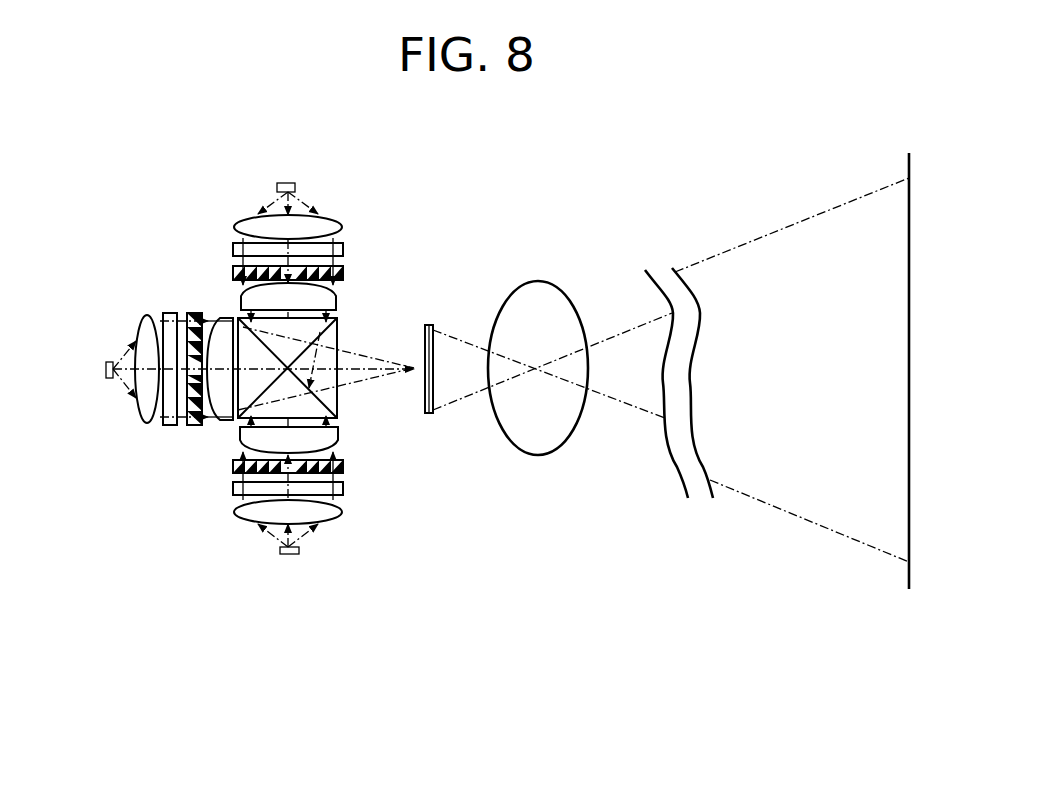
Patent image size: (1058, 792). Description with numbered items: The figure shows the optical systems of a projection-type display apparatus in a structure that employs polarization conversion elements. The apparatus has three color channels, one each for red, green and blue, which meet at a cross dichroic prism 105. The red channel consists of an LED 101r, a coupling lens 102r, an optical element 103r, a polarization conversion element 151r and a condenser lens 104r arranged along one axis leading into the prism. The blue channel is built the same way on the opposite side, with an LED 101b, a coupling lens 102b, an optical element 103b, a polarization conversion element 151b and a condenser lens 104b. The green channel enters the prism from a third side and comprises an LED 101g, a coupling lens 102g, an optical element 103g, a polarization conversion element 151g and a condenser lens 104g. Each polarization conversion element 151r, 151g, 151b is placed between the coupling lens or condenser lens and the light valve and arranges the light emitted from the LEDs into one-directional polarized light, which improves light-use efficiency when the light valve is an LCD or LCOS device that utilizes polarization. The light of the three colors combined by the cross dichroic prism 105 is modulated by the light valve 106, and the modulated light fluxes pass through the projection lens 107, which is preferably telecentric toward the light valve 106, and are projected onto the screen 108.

The LED 101r is at (288, 182).
The coupling lens 102r is at (343, 222).
The optical element 103r is at (344, 250).
The polarization conversion element 151r is at (344, 273).
The condenser lens 104r is at (337, 300).
The cross dichroic prism 105 is at (338, 326).
The condenser lens 104b is at (339, 432).
The polarization conversion element 151b is at (344, 466).
The optical element 103b is at (344, 488).
The coupling lens 102b is at (341, 519).
The LED 101b is at (290, 557).
The LED 101g is at (105, 370).
The coupling lens 102g is at (137, 322).
The optical element 103g is at (166, 312).
The polarization conversion element 151g is at (195, 313).
The condenser lens 104g is at (226, 318).
The light valve 106 is at (431, 414).
The projection lens 107 is at (563, 455).
The screen 108 is at (908, 580).